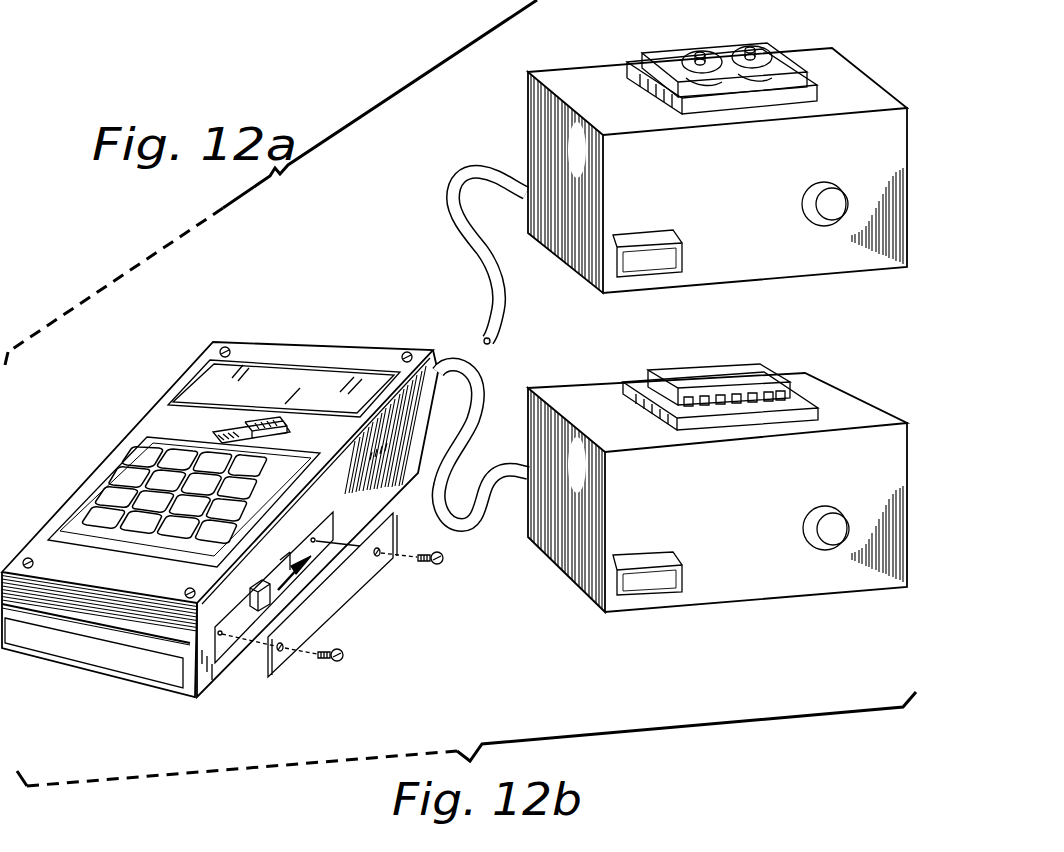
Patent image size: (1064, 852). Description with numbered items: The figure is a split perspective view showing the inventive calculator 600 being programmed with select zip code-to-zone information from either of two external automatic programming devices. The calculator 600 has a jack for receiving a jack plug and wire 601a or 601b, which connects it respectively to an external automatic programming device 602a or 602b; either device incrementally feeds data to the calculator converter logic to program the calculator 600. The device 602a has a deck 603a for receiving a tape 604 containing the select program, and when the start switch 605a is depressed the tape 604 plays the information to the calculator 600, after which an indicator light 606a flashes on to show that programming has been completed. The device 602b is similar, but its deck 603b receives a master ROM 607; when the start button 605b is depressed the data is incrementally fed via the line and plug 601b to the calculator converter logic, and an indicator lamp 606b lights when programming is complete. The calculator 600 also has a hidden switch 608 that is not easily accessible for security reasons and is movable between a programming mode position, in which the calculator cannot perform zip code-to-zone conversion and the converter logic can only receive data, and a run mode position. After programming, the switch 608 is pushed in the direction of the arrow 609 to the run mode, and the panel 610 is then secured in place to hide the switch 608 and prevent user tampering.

In FIG. 12A, the calculator 600 is at (140, 447).
In FIG. 12A, the jack plug and wire 601a is at (443, 197).
In FIG. 12B, the jack plug and wire 601b is at (470, 535).
In FIG. 12A, the external automatic programming device 602a is at (558, 80).
In FIG. 12B, the external automatic programming device 602b is at (588, 590).
In FIG. 12A, the deck 603a is at (820, 100).
In FIG. 12B, the deck 603b is at (815, 410).
In FIG. 12A, the tape 604 is at (770, 47).
In FIG. 12A, the start switch 605a is at (653, 267).
In FIG. 12B, the start button 605b is at (660, 587).
In FIG. 12A, the indicator light 606a is at (833, 220).
In FIG. 12B, the indicator lamp 606b is at (830, 520).
In FIG. 12B, the master ROM 607 is at (723, 375).
In FIG. 12B, the hidden switch 608 is at (253, 607).
In FIG. 12B, the arrow 609 is at (290, 583).
In FIG. 12B, the panel 610 is at (372, 570).